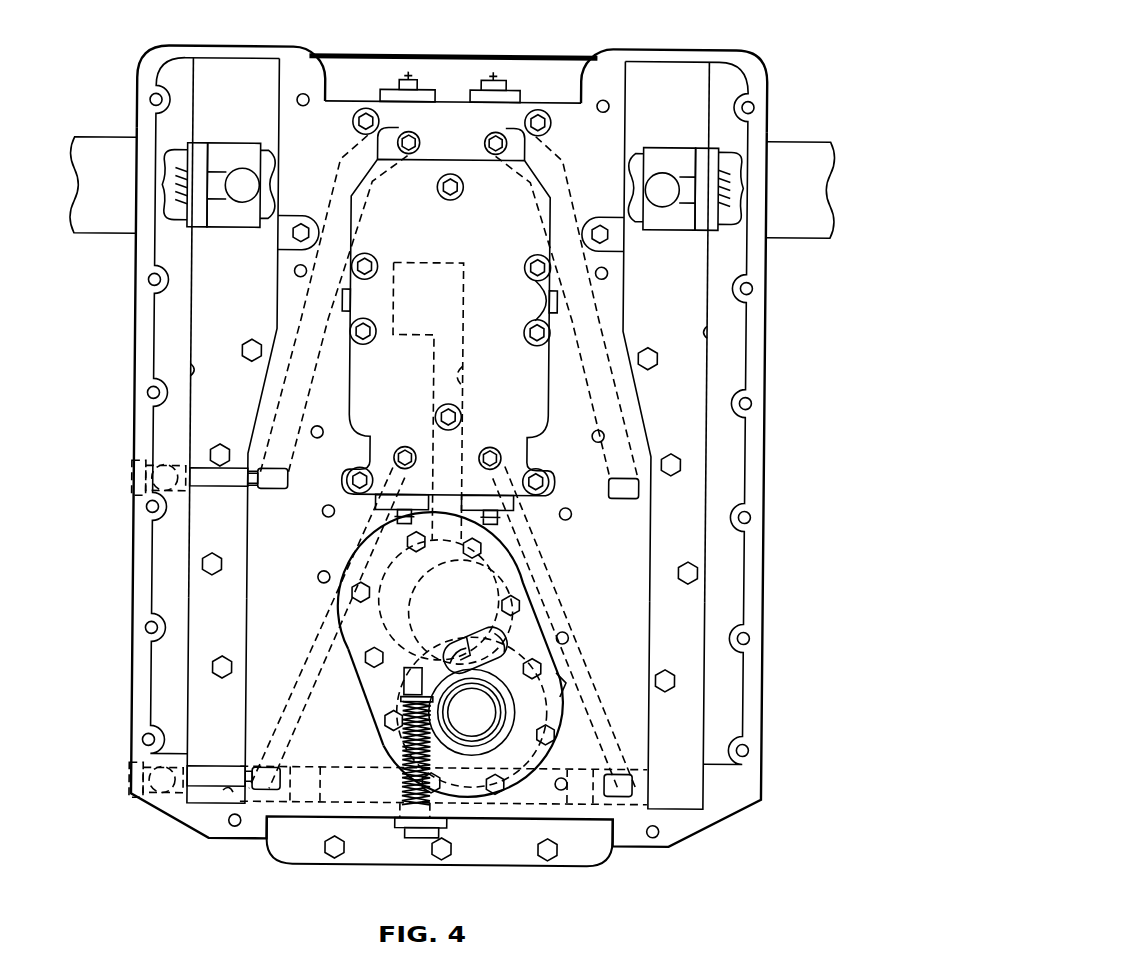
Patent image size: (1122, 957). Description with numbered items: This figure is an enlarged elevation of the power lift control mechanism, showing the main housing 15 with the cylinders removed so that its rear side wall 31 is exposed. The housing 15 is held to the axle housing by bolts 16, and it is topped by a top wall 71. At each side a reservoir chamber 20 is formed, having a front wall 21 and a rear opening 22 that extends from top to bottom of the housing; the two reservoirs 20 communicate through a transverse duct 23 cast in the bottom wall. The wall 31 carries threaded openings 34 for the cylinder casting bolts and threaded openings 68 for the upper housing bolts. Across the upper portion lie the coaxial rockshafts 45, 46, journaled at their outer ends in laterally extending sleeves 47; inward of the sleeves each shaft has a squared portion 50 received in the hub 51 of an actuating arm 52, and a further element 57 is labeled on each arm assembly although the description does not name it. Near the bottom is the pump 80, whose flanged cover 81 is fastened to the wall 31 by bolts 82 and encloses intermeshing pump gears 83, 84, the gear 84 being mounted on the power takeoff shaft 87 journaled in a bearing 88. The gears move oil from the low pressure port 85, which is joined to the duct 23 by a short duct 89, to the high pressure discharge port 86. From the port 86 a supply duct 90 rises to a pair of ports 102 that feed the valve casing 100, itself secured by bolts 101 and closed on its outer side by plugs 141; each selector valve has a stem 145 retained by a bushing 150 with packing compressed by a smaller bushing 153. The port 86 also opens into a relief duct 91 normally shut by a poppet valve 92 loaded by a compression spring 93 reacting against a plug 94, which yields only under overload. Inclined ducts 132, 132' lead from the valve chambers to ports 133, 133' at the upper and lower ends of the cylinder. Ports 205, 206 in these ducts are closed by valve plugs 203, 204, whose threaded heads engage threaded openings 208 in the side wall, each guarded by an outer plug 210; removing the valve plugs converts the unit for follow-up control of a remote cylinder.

The main housing 15 is at (685, 47).
The bolts 16 is at (670, 452).
The reservoir chamber 20 is at (201, 712).
The front wall 21 is at (203, 320).
The reservoir openings 22 is at (191, 372).
The transverse passageway or duct 23 is at (360, 800).
The rear side wall 31 is at (594, 572).
The threaded openings 34 is at (148, 622).
The rockshaft 45 is at (157, 172).
The rockshaft 46 is at (742, 185).
The laterally extending sleeves 47 is at (83, 212).
The second squared portion 50 is at (270, 165).
The hub 51 is at (226, 227).
The actuating arm 52 is at (207, 170).
The ball joint 57 is at (240, 172).
The threaded openings 68 is at (292, 101).
The top wall 71 is at (222, 48).
The pump 80 is at (446, 597).
The flanged cover or pump housing 81 is at (364, 684).
The bolts 82 is at (512, 596).
The pump gear 83 is at (477, 636).
The pump gear 84 is at (455, 651).
The low pressure port 85 is at (501, 650).
The high pressure discharge port 86 is at (412, 678).
The tractor power takeoff shaft 87 is at (462, 710).
The bearing 88 is at (515, 742).
The short passageway or duct 89 is at (570, 694).
The supply duct 90 is at (466, 378).
The relief duct 91 is at (440, 708).
The poppet valve 92 is at (403, 718).
The compression spring 93 is at (406, 779).
The plug 94 is at (416, 831).
The valve casing 100 is at (465, 234).
The bolts 101 is at (533, 322).
The ports 102 is at (423, 401).
The duct 132 is at (455, 305).
The duct 132' is at (444, 627).
The port 133 is at (467, 494).
The port 133' is at (466, 763).
The plugs 141 is at (481, 143).
The stem 145 is at (423, 88).
The bushing 150 is at (478, 98).
The smaller bushing 153 is at (403, 80).
The valve plug 203 is at (232, 490).
The valve plug 204 is at (210, 772).
The port 205 is at (287, 478).
The port 206 is at (232, 796).
The threaded openings 208 is at (183, 467).
The plug 210 is at (132, 480).